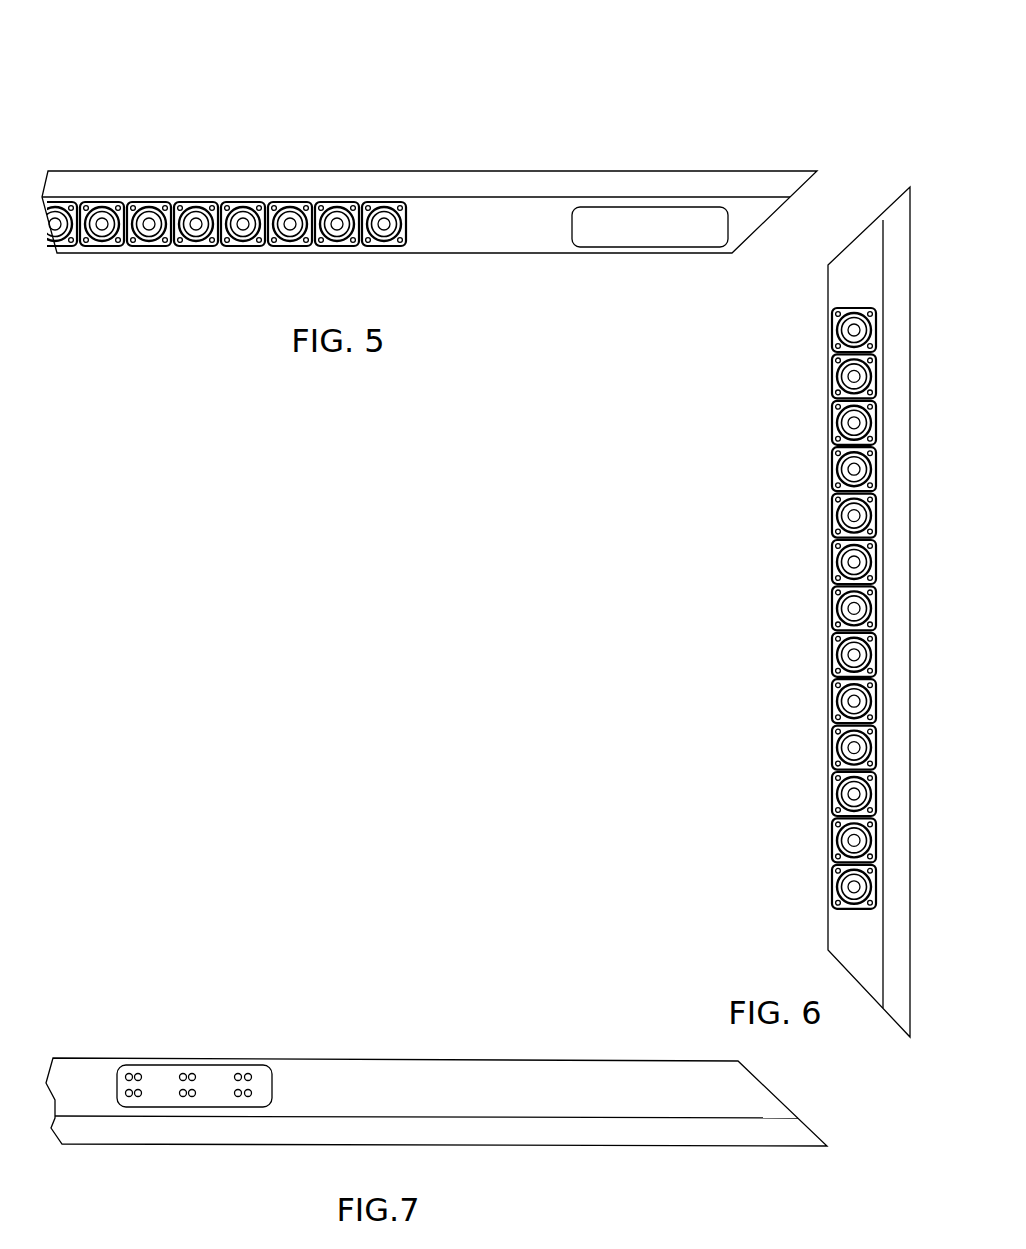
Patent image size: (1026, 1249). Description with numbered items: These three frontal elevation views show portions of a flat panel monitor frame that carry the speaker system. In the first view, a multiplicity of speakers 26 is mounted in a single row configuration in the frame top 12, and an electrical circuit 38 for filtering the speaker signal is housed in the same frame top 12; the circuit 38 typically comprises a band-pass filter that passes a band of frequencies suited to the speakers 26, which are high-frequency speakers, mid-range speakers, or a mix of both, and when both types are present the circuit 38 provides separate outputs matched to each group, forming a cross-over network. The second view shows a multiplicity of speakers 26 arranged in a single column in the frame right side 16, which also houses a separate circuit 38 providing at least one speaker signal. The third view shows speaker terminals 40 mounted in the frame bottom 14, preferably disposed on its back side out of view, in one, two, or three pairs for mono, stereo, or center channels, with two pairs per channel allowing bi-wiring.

In FIG. 5, the frame top 12 is at (555, 133).
In FIG. 7, the frame bottom 14 is at (413, 995).
In FIG. 6, the frame right side 16 is at (627, 615).
In FIG. 5, the speakers 26 is at (55, 200).
In FIG. 6, the speakers 26 is at (828, 339).
In FIG. 5, the electrical circuit 38 is at (618, 228).
In FIG. 7, the speaker terminals 40 is at (115, 1053).